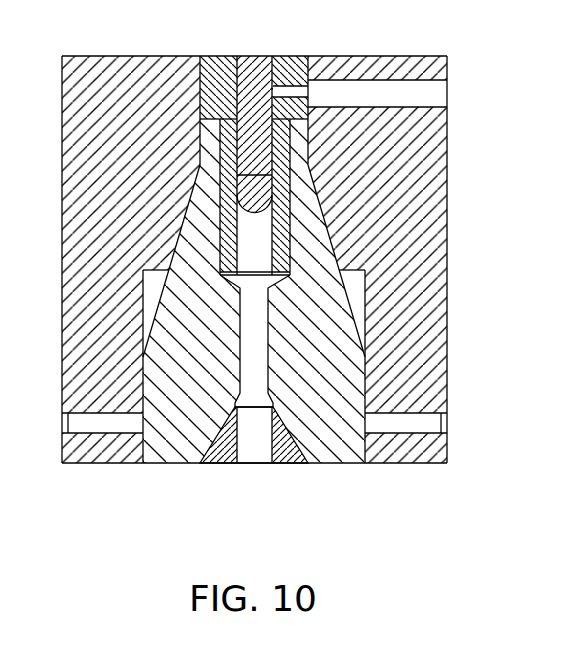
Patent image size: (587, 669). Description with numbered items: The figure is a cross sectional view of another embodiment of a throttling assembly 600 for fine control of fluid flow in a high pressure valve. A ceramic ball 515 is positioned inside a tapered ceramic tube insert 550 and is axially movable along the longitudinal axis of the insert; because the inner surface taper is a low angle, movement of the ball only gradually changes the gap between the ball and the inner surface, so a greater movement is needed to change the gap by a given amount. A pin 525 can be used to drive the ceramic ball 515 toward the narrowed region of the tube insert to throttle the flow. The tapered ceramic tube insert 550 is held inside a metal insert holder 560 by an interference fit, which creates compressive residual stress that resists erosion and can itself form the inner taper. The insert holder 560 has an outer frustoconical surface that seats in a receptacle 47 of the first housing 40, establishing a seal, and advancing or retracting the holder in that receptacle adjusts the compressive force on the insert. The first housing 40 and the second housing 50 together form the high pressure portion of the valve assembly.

The first housing 40 is at (66, 304).
The receptacle 47 is at (186, 228).
The second housing 50 is at (93, 458).
The ceramic ball 515 is at (253, 175).
The pin 525 is at (255, 85).
The tapered ceramic tube insert 550 is at (283, 223).
The insert holder 560 is at (333, 328).
The throttling assembly 600 is at (492, 348).